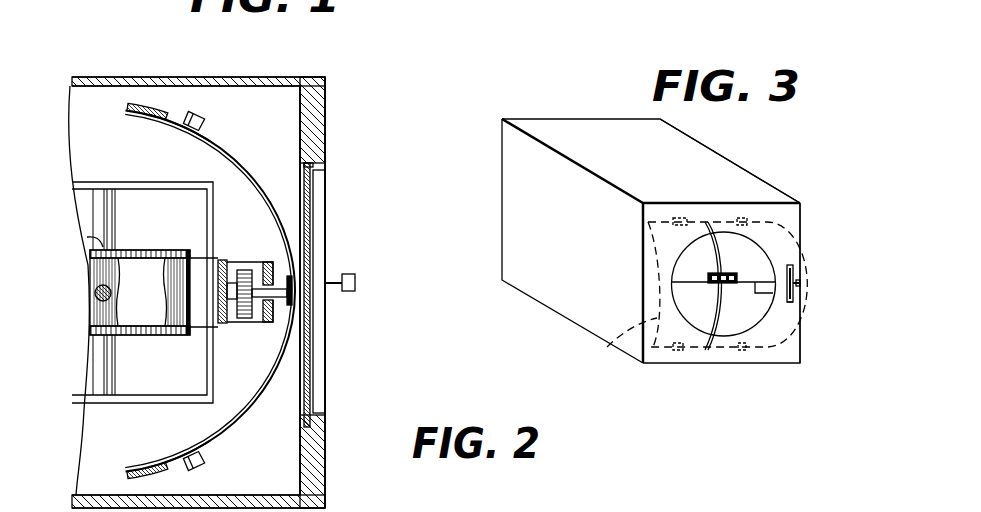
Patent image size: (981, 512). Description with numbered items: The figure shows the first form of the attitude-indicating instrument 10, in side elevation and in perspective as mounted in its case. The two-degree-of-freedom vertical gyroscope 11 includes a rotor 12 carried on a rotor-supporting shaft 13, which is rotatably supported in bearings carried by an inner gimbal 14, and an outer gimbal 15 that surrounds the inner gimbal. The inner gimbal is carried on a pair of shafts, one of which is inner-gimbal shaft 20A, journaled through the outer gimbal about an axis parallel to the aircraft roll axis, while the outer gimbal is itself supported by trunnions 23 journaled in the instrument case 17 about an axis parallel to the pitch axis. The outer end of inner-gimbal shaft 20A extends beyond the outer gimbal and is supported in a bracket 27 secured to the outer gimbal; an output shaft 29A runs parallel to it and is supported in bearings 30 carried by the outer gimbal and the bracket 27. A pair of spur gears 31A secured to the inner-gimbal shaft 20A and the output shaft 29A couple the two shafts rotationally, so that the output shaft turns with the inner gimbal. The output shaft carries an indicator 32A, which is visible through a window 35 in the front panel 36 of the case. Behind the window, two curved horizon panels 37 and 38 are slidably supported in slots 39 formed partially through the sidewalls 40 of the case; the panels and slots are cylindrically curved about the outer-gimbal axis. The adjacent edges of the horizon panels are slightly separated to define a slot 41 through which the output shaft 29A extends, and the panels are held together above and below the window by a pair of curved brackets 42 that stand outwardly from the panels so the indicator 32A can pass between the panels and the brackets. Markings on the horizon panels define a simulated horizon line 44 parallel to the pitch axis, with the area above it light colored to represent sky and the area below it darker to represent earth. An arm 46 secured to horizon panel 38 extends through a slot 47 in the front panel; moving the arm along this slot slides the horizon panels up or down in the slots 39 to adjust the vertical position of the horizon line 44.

In FIG. 2, the attitude-indicating instrument 10 is at (355, 80).
In FIG. 3, the attitude-indicating instrument 10 is at (553, 76).
In FIG. 2, the vertical gyroscope 11 is at (90, 163).
In FIG. 2, the rotor 12 is at (87, 240).
In FIG. 2, the rotor-supporting shaft 13 is at (115, 210).
In FIG. 2, the inner gimbal 14 is at (148, 403).
In FIG. 2, the outer gimbal 15 is at (149, 304).
In FIG. 2, the instrument case 17 is at (148, 77).
In FIG. 3, the instrument case 17 is at (735, 168).
In FIG. 2, the inner-gimbal shaft 20A is at (215, 272).
In FIG. 2, the trunnion 23 is at (95, 294).
In FIG. 2, the bracket 27 is at (265, 322).
In FIG. 2, the output shaft 29A is at (218, 323).
In FIG. 2, the bearing 30 is at (240, 270).
In FIG. 2, the spur gear 31A is at (248, 320).
In FIG. 2, the indicator 32A is at (287, 258).
In FIG. 3, the indicator 32A is at (703, 287).
In FIG. 2, the window 35 is at (313, 213).
In FIG. 2, the front panel 36 is at (326, 128).
In FIG. 3, the front panel 36 is at (793, 212).
In FIG. 3, the curved horizon panel 37 is at (704, 268).
In FIG. 2, the curved horizon panel 38 is at (170, 120).
In FIG. 3, the curved horizon panel 38 is at (756, 268).
In FIG. 2, the slot 39 is at (128, 114).
In FIG. 2, the sidewall 40 is at (162, 166).
In FIG. 3, the sidewall 40 is at (586, 249).
In FIG. 2, the slot 41 is at (247, 413).
In FIG. 3, the slot 41 is at (712, 306).
In FIG. 2, the curved bracket 42 is at (205, 121).
In FIG. 3, the curved bracket 42 is at (690, 218).
In FIG. 3, the simulated horizon line 44 is at (794, 303).
In FIG. 2, the arm 46 is at (345, 291).
In FIG. 3, the arm 46 is at (801, 284).
In FIG. 3, the slot 47 is at (793, 268).